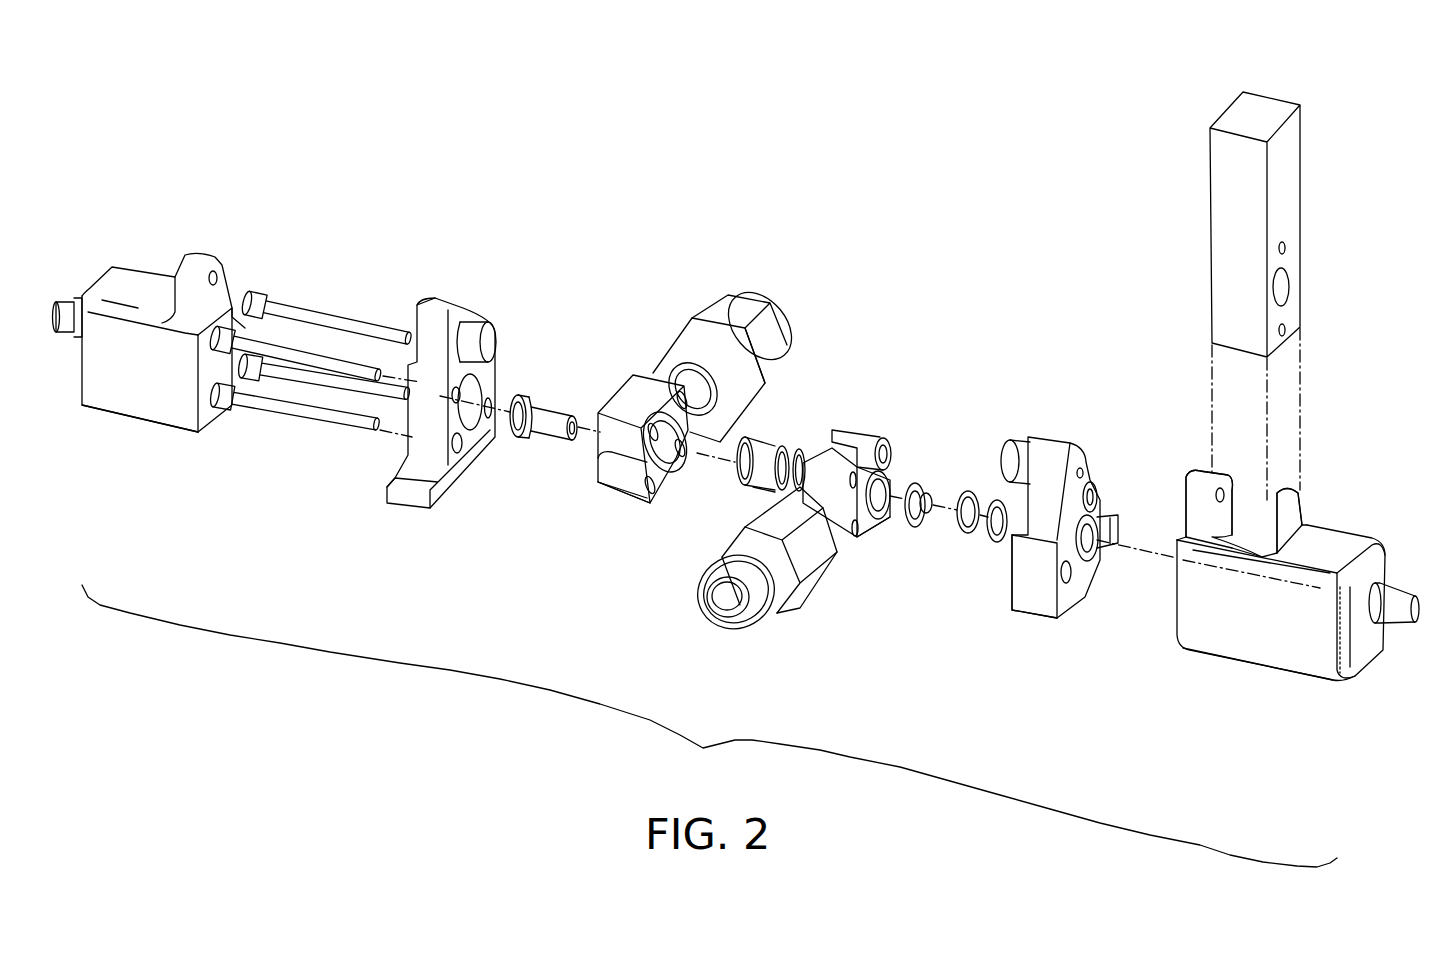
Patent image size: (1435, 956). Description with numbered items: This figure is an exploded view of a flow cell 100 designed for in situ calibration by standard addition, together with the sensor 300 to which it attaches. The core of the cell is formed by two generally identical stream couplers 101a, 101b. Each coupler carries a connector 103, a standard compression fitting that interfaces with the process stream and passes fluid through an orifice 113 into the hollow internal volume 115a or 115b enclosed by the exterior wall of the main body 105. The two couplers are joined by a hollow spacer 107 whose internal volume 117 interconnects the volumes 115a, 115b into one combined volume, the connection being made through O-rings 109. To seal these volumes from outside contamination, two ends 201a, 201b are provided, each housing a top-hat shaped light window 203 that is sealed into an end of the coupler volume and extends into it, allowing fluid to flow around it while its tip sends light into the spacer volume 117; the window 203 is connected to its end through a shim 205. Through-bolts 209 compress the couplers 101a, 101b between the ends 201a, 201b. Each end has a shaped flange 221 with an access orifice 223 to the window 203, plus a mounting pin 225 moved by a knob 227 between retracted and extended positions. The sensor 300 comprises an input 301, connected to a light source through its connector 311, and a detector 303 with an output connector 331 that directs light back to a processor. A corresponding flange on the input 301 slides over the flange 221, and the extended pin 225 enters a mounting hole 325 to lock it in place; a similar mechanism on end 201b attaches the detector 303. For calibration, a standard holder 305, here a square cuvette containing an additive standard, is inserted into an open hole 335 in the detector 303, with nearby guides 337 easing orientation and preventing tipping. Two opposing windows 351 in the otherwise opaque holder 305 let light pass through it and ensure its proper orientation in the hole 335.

The flow cell 100 is at (822, 44).
The first stream coupler 101a is at (697, 337).
The second stream coupler 101b is at (817, 580).
The connector 103 is at (773, 324).
The main body 105 is at (637, 398).
The hollow spacer 107 is at (752, 482).
The O-rings 109 is at (748, 440).
The orifice 113 is at (745, 610).
The internal volume of first coupler 115a is at (647, 503).
The internal volume of second coupler 115b is at (885, 535).
The internal volume of spacer 117 is at (746, 468).
The first end 201a is at (450, 305).
The second end 201b is at (1062, 445).
The light window 203 is at (557, 416).
The shim 205 is at (518, 402).
The bolts 209 is at (340, 362).
The shaped flange 221 is at (1085, 590).
The access orifice 223 is at (470, 413).
The mounting pin 225 is at (1085, 470).
The knob 227 is at (478, 325).
The sensor 300 is at (120, 400).
The input 301 is at (177, 410).
The detector 303 is at (1347, 552).
The standard holder 305 is at (1220, 250).
The connector 311 is at (80, 298).
The mounting hole 325 is at (220, 270).
The output connector 331 is at (1397, 612).
The hole 335 is at (1228, 550).
The guides 337 is at (1203, 483).
The windows 351 is at (1285, 288).